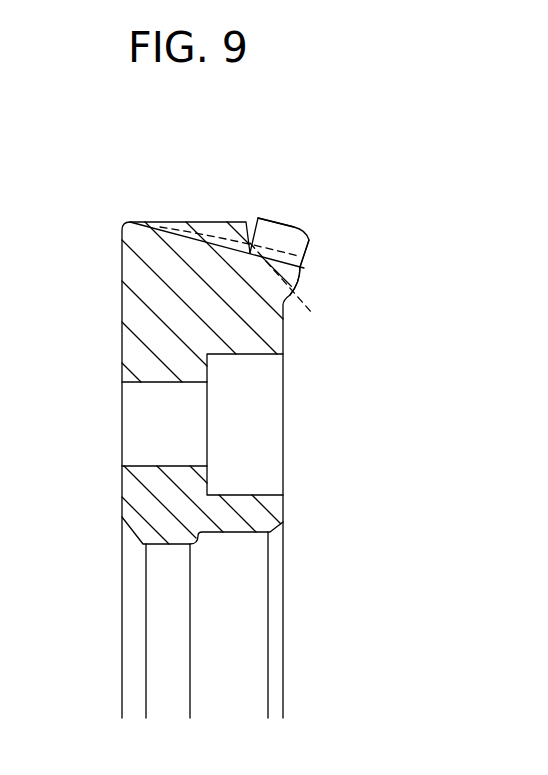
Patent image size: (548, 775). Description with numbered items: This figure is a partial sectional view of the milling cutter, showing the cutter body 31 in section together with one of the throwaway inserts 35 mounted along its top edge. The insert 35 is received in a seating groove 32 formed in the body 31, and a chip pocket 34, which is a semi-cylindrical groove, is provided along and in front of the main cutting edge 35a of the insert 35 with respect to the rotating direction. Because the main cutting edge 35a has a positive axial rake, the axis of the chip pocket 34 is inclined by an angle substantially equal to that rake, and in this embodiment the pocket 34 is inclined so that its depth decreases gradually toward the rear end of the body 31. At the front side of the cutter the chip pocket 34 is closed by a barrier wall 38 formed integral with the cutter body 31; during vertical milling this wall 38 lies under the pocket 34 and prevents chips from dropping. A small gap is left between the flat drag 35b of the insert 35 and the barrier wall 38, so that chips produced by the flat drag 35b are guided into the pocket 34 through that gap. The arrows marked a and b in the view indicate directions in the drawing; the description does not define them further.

The cutter body 31 is at (137, 303).
The seating groove 32 is at (291, 299).
The chip pocket 34 is at (208, 245).
The throwaway insert 35 is at (302, 225).
The main cutting edge 35a is at (283, 218).
The flat drag 35b is at (313, 242).
The barrier wall 38 is at (284, 291).
The direction a is at (388, 283).
The direction b is at (248, 175).